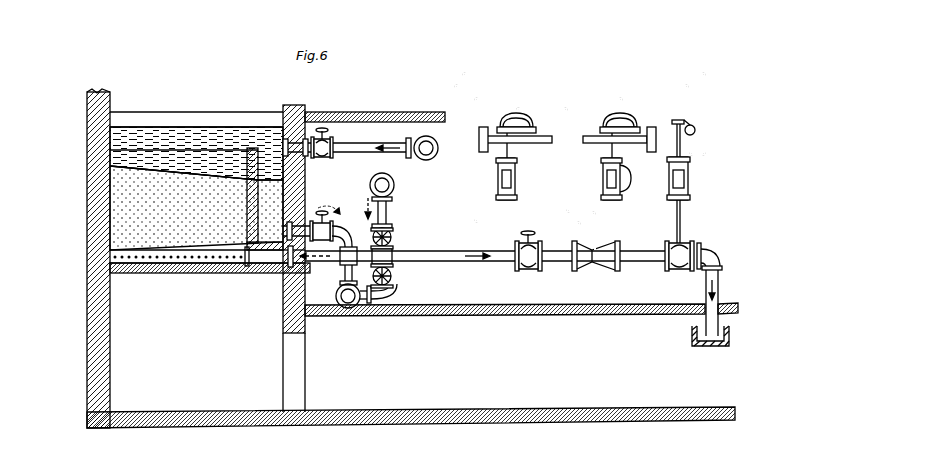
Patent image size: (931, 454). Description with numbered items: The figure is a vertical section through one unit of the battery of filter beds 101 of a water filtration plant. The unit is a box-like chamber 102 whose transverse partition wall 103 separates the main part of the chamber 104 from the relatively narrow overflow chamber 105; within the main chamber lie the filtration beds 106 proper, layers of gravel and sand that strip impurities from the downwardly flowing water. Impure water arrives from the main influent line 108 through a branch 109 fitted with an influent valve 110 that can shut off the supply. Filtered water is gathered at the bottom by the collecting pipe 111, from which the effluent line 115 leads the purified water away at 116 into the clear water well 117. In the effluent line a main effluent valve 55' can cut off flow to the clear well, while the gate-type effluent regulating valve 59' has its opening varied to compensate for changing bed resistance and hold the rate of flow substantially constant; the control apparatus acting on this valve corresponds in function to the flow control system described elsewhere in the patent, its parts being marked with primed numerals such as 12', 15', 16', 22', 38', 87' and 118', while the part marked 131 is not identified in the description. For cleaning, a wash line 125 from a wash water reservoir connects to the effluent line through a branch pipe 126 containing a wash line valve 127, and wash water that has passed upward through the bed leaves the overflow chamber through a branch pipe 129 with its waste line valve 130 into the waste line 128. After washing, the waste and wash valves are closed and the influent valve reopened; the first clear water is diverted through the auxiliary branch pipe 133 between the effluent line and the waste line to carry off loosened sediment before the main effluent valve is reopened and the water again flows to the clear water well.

The filter beds 101 is at (110, 166).
The box-like chamber 102 is at (170, 127).
The transverse partition wall 103 is at (250, 148).
The main part of the chamber 104 is at (110, 181).
The overflow chamber 105 is at (352, 106).
The filtration beds 106 is at (110, 240).
The main influent line 108 is at (428, 160).
The branches 109 is at (372, 147).
The influent valves 110 is at (324, 157).
The collecting pipes 111 is at (110, 258).
The effluent lines 115 is at (268, 264).
The effluent discharge 116 is at (714, 256).
The clear water well 117 is at (692, 342).
The wash line 125 is at (396, 190).
The branch pipes 126 is at (392, 214).
The wash line valves 127 is at (394, 236).
The waste line 128 is at (345, 309).
The branch pipes 129 is at (345, 272).
The waste line valves 130 is at (320, 210).
The effluent pipe 131 is at (443, 262).
The auxiliary branch pipes 133 is at (398, 300).
The venturi tube 12' is at (599, 246).
The diaphragm regulator 15' is at (623, 129).
The diaphragm regulator 16' is at (521, 135).
The pilot valve 22' is at (626, 177).
The pilot valve 38' is at (523, 177).
The main effluent valve 55' is at (542, 257).
The effluent regulating valve 59' is at (674, 264).
The control valve 87' is at (693, 181).
The needle valve 118' is at (599, 152).